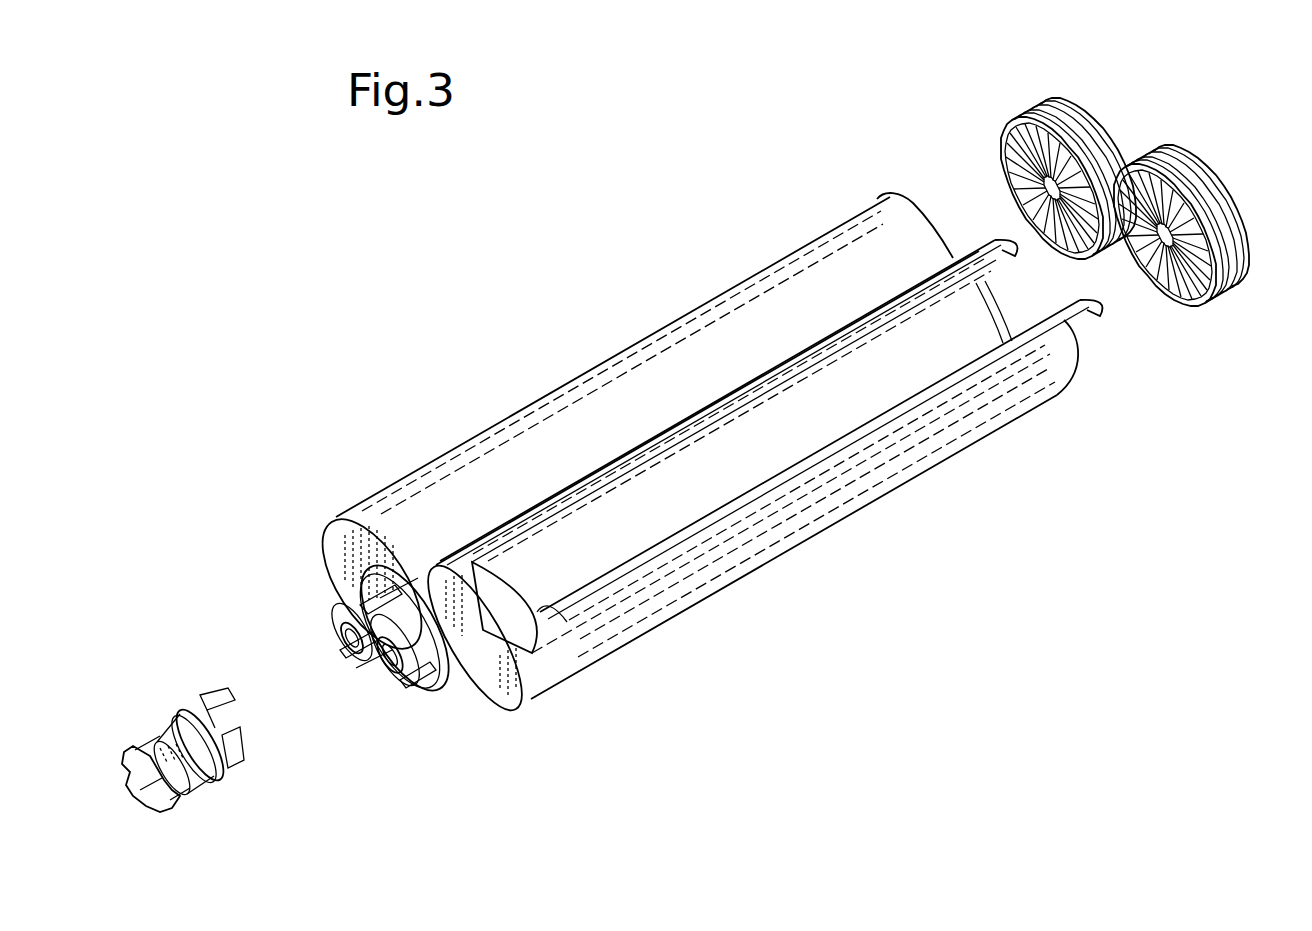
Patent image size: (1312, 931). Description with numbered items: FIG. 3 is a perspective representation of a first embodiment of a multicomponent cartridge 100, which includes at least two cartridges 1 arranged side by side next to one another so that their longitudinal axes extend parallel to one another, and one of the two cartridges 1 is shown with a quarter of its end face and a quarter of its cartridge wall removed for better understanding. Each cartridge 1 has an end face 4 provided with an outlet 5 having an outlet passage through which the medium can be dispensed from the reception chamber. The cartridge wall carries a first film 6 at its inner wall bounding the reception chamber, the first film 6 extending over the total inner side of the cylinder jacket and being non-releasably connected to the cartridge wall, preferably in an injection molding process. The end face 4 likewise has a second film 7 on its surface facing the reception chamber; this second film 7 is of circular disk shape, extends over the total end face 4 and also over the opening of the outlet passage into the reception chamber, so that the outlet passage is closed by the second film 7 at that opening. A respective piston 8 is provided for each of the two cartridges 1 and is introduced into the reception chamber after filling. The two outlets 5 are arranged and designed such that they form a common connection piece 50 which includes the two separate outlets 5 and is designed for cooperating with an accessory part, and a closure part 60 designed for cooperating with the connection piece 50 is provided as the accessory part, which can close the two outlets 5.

The multicomponent cartridge 100 is at (650, 180).
The cartridge 1 is at (429, 443).
The end face 4 is at (337, 533).
The outlet 5 is at (350, 592).
The first film 6 is at (1080, 317).
The second film 7 is at (533, 657).
The piston 8 is at (1050, 99).
The connection piece 50 is at (365, 695).
The closure part 60 is at (152, 812).